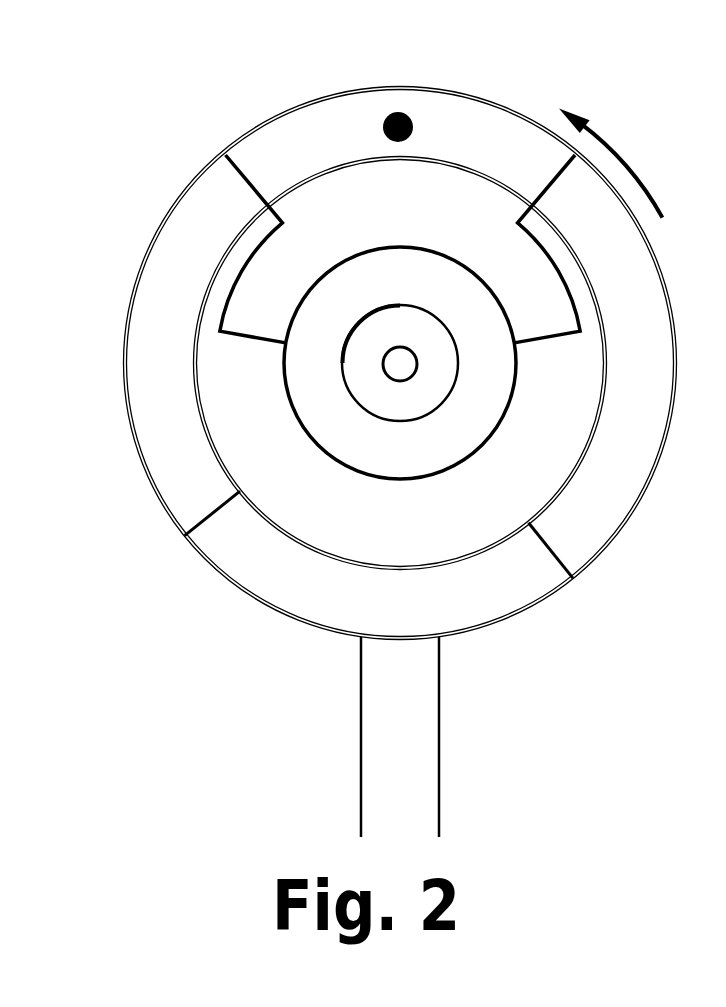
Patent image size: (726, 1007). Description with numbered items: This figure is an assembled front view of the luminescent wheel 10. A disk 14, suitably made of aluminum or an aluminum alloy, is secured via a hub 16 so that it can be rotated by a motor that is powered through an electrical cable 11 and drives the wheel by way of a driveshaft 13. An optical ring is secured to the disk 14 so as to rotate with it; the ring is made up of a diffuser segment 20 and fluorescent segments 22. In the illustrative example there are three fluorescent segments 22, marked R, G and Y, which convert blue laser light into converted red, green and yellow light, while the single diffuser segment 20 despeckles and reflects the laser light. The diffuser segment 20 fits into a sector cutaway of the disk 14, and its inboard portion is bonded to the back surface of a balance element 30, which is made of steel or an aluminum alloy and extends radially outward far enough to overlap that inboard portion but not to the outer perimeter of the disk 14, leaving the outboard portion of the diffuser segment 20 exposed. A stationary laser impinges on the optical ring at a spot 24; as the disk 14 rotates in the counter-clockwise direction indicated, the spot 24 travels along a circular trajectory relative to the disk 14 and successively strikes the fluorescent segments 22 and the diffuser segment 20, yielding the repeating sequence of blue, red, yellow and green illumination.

The luminescent wheel 10 is at (178, 94).
The electrical cable 11 is at (362, 772).
The driveshaft 13 is at (415, 388).
The disk 14 is at (288, 475).
The hub 16 is at (350, 428).
The diffuser segment 20 is at (337, 137).
The fluorescent segment 22 is at (142, 201).
The spot 24 is at (410, 115).
The balance element 30 is at (345, 237).